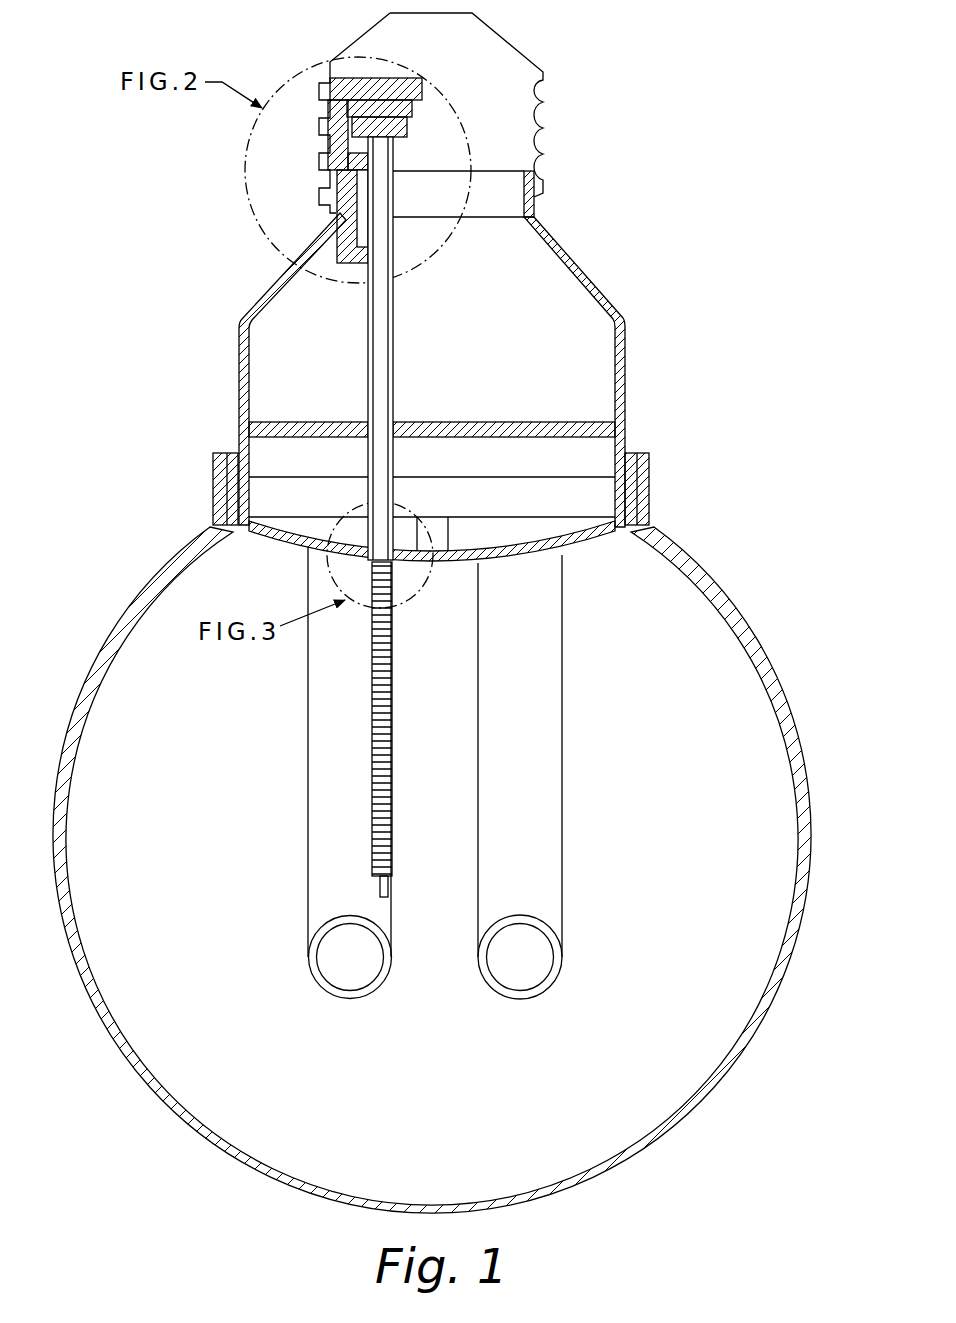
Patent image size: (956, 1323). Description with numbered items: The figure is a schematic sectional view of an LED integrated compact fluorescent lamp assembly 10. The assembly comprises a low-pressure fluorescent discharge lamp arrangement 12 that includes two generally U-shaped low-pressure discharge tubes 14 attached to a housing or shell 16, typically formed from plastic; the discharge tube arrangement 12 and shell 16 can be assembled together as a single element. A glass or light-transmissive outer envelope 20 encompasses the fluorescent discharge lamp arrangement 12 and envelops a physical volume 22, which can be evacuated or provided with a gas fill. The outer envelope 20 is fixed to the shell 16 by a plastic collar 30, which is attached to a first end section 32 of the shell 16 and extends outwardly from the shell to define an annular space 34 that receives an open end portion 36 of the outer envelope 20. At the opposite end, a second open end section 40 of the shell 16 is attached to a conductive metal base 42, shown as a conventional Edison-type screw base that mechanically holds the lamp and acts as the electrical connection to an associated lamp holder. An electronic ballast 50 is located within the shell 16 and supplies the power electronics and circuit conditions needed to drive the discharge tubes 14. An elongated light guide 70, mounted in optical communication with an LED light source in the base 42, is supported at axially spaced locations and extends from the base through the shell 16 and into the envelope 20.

The LED integrated compact fluorescent lamp assembly 10 is at (713, 212).
The low-pressure fluorescent discharge lamp arrangement 12 is at (250, 955).
The low-pressure discharge tube 14 is at (560, 820).
The housing or shell 16 is at (585, 276).
The outer envelope 20 is at (766, 655).
The physical volume 22 is at (258, 1112).
The plastic collar 30 is at (650, 497).
The first end section of the shell 32 is at (652, 445).
The annular space 34 is at (212, 494).
The open end portion of the outer envelope 36 is at (652, 510).
The second open end section of the shell 40 is at (539, 191).
The conductive metal base 42 is at (545, 105).
The electronic ballast 50 is at (480, 422).
The elongated light guide 70 is at (383, 377).